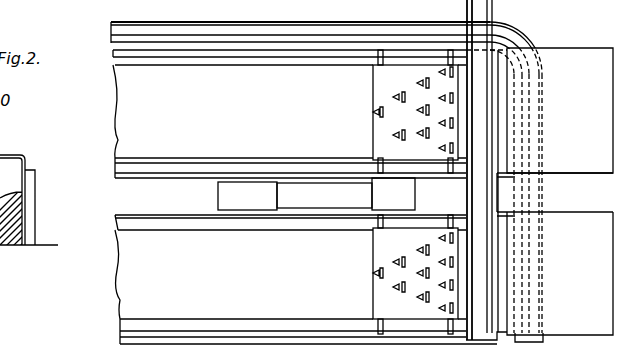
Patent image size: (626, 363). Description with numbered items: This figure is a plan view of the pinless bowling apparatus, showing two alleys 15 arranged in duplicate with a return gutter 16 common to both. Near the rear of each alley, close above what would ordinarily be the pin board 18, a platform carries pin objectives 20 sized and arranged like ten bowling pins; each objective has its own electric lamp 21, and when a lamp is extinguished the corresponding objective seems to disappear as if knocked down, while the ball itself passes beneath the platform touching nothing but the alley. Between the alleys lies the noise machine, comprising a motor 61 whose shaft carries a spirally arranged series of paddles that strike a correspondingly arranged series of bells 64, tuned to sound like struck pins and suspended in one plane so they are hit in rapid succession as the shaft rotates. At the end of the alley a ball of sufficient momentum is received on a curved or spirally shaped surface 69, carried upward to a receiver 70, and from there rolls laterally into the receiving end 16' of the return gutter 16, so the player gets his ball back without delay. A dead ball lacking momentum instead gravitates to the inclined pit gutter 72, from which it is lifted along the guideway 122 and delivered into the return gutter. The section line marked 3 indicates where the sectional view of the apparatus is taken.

The section line 3- 3 is at (183, 12).
The alley 15 is at (147, 240).
The return gutter 16 is at (300, 21).
The receiving end of the return gutter 16' is at (560, 109).
The pin board 18 is at (412, 151).
The pin objectives 20 is at (375, 274).
The electric lamps 21 is at (395, 288).
The motor 61 is at (238, 198).
The bells 64 is at (308, 198).
The curved or spirally shaped surface 69 is at (597, 170).
The receiver 70 is at (538, 198).
The pit gutter 72 is at (450, 195).
The guideway 122 is at (496, 6).